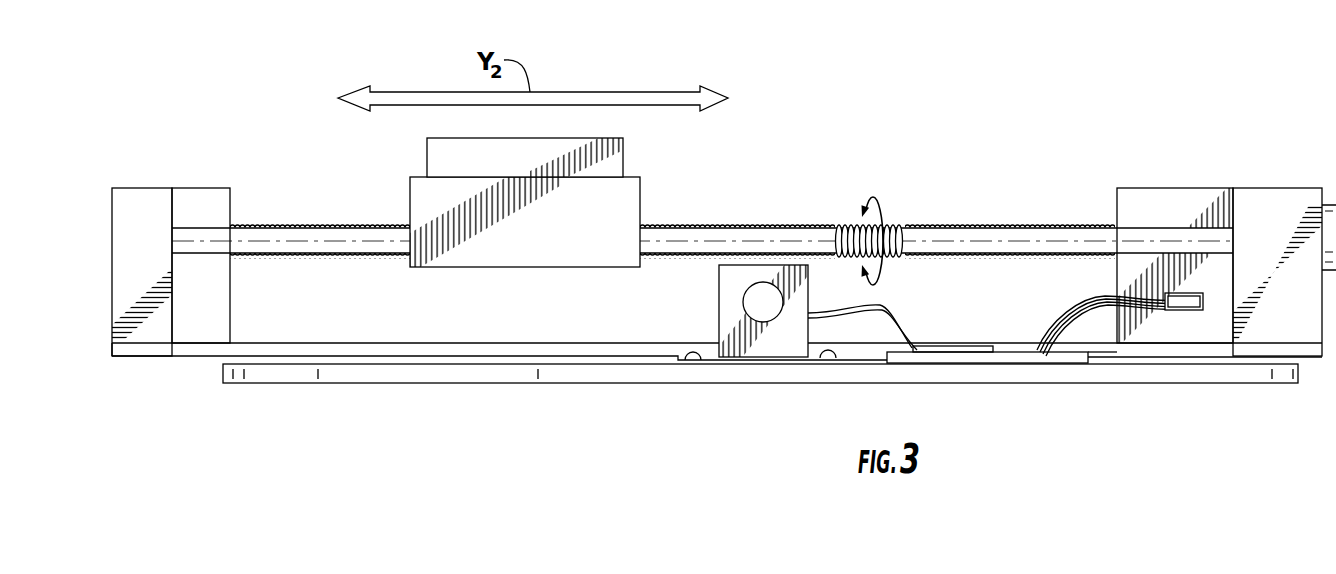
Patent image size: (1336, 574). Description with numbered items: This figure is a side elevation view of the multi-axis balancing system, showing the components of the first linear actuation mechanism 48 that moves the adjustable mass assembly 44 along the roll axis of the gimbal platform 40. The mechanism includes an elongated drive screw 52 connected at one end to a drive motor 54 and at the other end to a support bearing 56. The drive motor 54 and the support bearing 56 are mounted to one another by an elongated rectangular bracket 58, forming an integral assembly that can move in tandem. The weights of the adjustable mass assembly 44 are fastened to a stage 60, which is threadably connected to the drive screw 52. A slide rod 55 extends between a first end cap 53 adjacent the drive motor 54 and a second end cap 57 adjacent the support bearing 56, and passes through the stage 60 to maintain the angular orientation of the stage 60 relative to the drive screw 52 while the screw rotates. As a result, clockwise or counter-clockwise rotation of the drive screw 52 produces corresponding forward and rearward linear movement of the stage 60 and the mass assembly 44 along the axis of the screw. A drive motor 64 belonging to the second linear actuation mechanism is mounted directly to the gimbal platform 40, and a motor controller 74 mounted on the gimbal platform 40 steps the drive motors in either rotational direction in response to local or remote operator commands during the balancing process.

The gimbal platform 40 is at (1065, 383).
The adjustable mass assembly 44 is at (443, 157).
The first linear actuation mechanism 48 is at (253, 182).
The drive screw 52 is at (890, 226).
The first end cap 53 is at (1288, 202).
The drive motor 54 is at (1167, 203).
The slide rod 55 is at (305, 243).
The support bearing 56 is at (205, 207).
The second end cap 57 is at (137, 207).
The elongated rectangular bracket 58 is at (1110, 350).
The stage 60 is at (625, 194).
The drive motor 64 is at (792, 345).
The motor controller 74 is at (485, 355).